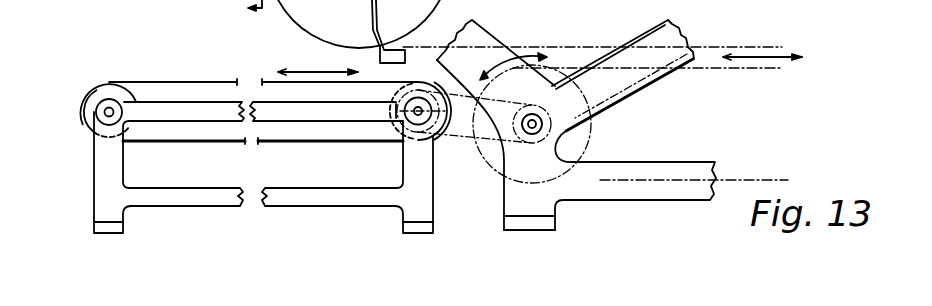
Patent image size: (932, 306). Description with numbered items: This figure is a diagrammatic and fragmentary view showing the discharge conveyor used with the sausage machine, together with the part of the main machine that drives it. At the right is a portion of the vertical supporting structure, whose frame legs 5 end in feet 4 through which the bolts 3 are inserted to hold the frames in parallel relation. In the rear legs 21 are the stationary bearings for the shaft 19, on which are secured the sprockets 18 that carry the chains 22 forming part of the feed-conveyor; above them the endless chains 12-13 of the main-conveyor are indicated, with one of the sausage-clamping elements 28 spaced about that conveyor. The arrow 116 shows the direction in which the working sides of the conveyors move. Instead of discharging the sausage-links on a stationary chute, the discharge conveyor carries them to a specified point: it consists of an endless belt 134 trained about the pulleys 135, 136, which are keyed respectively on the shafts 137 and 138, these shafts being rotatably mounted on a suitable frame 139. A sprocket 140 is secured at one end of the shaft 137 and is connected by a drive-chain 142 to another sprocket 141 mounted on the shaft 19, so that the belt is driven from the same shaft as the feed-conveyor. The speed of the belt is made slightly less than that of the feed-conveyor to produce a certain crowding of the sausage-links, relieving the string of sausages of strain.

The bolts 3 is at (244, 10).
The feet 4 is at (557, 225).
The frame legs 5 is at (518, 212).
The endless chains 12-13 is at (572, 36).
The sprockets 18 is at (591, 131).
The shaft 19 is at (528, 128).
The rear legs 21 is at (501, 167).
The chains 22 is at (710, 68).
The sausage-clamping elements 28 is at (408, 56).
The arrow 116 is at (778, 60).
The endless belt 134 is at (302, 142).
The pulley 135 is at (398, 118).
The pulley 136 is at (127, 131).
The shaft 137 is at (404, 115).
The shaft 138 is at (106, 112).
The frame 139 is at (106, 160).
The sprocket 140 is at (400, 99).
The sprocket 141 is at (558, 134).
The drive-chain 142 is at (470, 137).